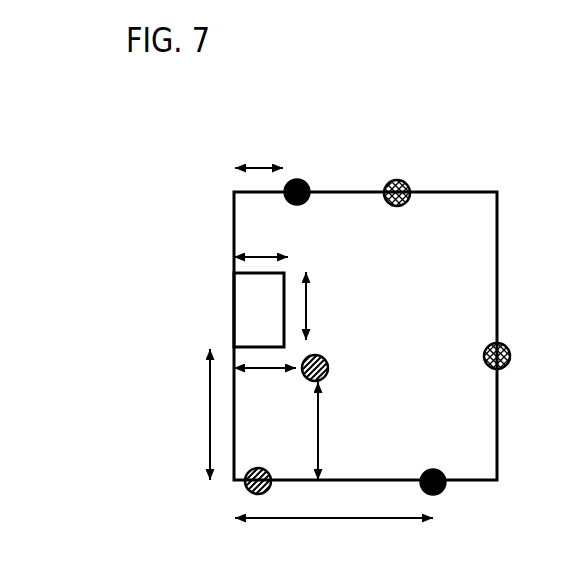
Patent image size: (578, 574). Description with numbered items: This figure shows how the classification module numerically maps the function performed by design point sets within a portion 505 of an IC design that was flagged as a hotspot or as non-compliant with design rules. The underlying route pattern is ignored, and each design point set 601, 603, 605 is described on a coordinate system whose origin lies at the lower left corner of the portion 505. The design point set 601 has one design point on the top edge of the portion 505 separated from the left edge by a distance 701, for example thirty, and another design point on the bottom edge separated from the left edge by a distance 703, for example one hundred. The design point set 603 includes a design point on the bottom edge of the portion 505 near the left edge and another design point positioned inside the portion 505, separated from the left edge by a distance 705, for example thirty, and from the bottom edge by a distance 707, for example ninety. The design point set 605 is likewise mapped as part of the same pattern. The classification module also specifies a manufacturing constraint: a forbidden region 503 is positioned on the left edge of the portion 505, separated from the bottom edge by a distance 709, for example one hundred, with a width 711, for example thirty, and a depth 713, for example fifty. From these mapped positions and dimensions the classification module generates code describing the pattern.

The portion 505 is at (203, 80).
The forbidden region 503 is at (234, 308).
The design point set 601 is at (308, 185).
The design point set 603 is at (322, 358).
The design point set 605 is at (406, 187).
The distance 701 is at (265, 165).
The distance 703 is at (350, 520).
The distance 705 is at (265, 372).
The distance 707 is at (322, 432).
The distance 709 is at (210, 405).
The width 711 is at (258, 255).
The depth 713 is at (310, 318).